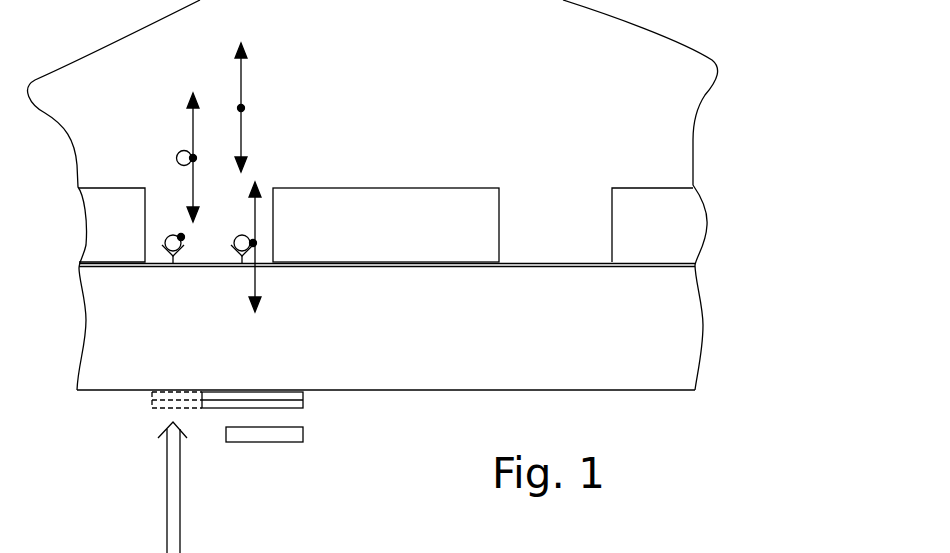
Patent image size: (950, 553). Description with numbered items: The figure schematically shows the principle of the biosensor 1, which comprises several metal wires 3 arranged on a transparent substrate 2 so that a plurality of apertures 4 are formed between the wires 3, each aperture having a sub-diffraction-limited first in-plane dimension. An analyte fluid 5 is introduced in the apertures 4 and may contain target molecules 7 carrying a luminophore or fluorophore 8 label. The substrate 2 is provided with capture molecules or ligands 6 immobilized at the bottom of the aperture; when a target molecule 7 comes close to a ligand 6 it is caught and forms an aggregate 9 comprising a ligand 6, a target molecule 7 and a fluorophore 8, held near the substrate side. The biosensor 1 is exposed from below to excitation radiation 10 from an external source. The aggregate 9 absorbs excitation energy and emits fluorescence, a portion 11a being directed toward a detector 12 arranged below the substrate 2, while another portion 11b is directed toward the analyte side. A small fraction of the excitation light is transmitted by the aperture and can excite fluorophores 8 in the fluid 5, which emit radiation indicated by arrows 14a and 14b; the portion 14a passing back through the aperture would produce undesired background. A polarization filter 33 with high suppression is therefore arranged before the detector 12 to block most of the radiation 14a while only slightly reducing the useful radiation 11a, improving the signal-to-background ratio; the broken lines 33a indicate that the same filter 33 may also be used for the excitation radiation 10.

The biosensor 1 is at (720, 287).
The transparent substrate 2 is at (107, 358).
The wires 3 is at (90, 252).
The apertures 4 is at (155, 238).
The analyte fluid 5 is at (495, 136).
The ligands 6 is at (172, 268).
The target molecules 7 is at (177, 156).
The fluorophore 8 is at (195, 156).
The aggregate 9 is at (239, 268).
The excitation radiation 10 is at (167, 463).
The portion of emitted radiation directed towards detector 11a is at (257, 280).
The portion of emitted radiation directed towards analyte side 11b is at (257, 222).
The detector 12 is at (303, 435).
The radiation from fluid fluorophores towards aperture 14a is at (191, 197).
The radiation from fluid fluorophores away from aperture 14b is at (191, 128).
The polarization filter 33 is at (303, 400).
The broken lines 33a is at (152, 400).